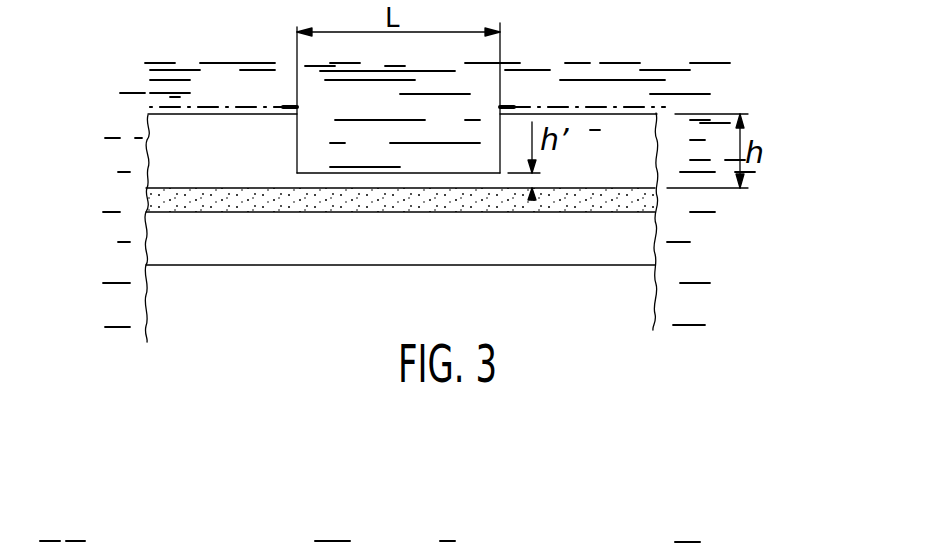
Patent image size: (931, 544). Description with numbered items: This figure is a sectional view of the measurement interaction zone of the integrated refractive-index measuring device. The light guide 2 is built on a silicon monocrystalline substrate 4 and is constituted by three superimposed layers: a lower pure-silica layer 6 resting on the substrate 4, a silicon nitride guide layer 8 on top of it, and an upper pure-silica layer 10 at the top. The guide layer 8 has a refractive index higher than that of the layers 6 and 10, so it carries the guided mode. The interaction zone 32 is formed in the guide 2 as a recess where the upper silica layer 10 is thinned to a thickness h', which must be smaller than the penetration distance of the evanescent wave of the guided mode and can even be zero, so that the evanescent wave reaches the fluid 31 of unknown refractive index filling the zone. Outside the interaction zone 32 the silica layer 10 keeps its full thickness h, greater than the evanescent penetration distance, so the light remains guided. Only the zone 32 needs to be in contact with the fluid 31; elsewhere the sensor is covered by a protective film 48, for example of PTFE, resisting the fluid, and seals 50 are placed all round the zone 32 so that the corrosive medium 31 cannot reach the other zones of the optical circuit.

The light guide 2 is at (110, 176).
The silicon monocrystalline substrate 4 is at (148, 324).
The lower silica layer 6 is at (148, 255).
The guide layer 8 is at (148, 205).
The upper silica layer 10 is at (150, 127).
The fluid 31 is at (150, 72).
The interaction zone 32 is at (336, 172).
The protective film 48 is at (229, 107).
The seals 50 is at (510, 107).